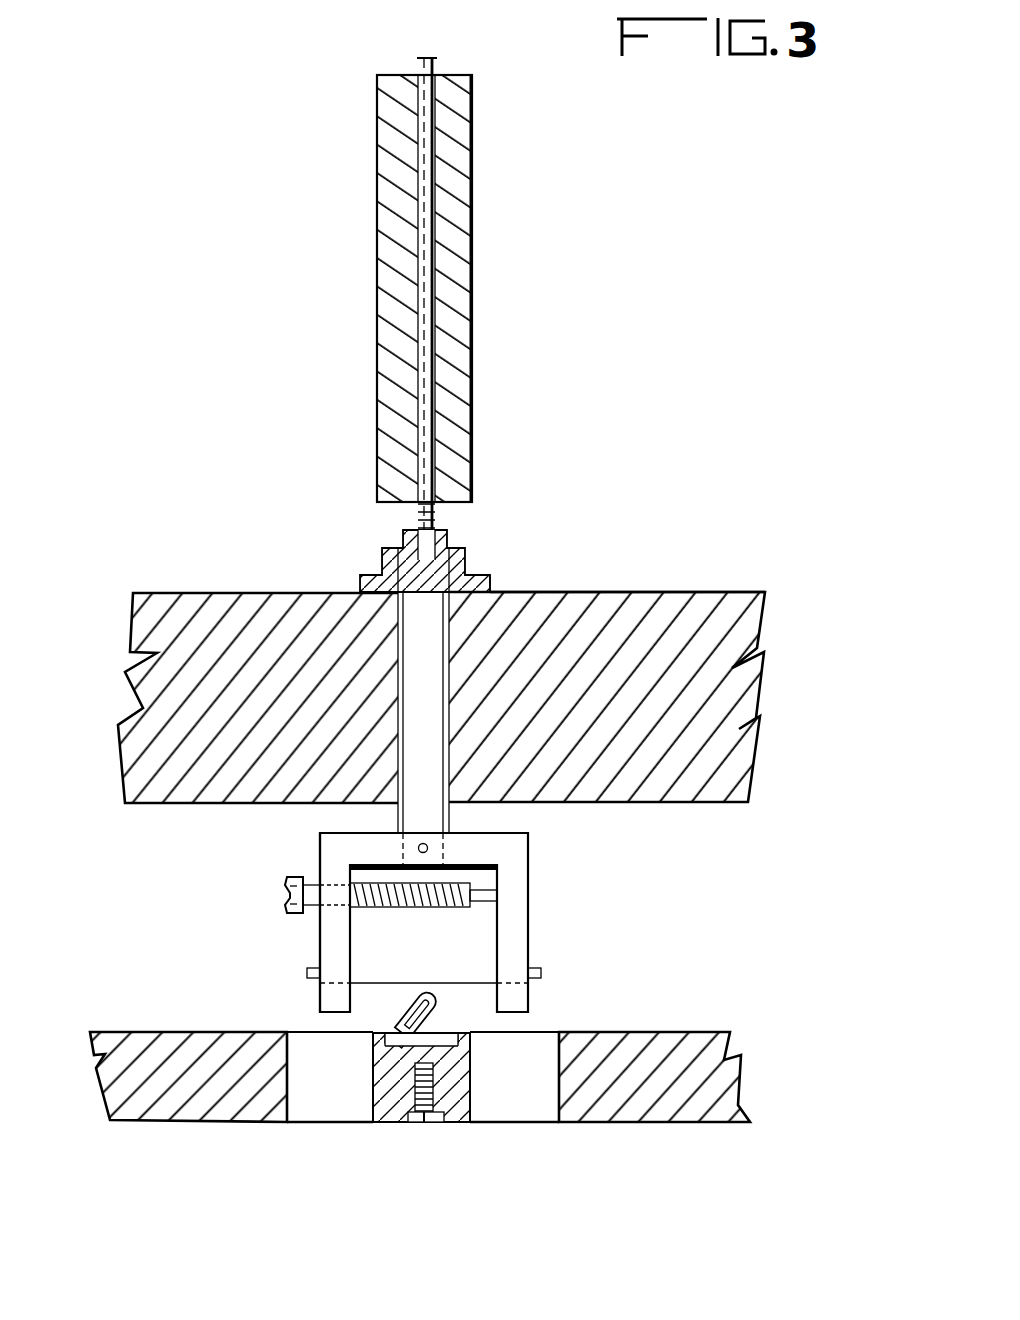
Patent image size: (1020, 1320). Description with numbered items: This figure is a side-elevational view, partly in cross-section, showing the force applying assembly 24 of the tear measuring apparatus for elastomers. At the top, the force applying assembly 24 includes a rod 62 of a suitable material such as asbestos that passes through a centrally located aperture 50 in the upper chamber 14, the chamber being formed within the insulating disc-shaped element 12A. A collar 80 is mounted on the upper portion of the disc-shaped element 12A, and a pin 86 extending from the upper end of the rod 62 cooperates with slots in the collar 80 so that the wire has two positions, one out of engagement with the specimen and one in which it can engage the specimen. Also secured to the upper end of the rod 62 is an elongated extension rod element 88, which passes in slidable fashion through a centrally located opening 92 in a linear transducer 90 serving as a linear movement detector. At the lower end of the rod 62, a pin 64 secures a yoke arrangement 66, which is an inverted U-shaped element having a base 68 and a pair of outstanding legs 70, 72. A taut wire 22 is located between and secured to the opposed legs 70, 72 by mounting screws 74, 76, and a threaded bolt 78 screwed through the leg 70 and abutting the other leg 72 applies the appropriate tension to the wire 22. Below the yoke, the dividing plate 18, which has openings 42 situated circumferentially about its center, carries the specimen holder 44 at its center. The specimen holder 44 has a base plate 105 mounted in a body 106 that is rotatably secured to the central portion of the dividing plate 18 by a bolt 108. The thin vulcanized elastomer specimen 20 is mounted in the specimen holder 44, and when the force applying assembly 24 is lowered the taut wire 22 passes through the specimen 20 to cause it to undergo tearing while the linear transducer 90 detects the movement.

The disc-shaped element 12A is at (688, 592).
The upper chamber 14 is at (772, 788).
The dividing plate 18 is at (705, 1002).
The elastomer specimen 20 is at (415, 1005).
The taut wire 22 is at (497, 983).
The force applying assembly 24 is at (492, 518).
The openings 42 is at (556, 1103).
The specimen holder 44 is at (447, 968).
The aperture 50 is at (445, 682).
The rod 62 is at (445, 712).
The pin 64 is at (430, 847).
The yoke arrangement 66 is at (555, 910).
The base 68 is at (350, 845).
The leg 70 is at (320, 931).
The leg 72 is at (526, 880).
The mounting screw 74 is at (308, 975).
The mounting screw 76 is at (540, 978).
The threaded bolt 78 is at (393, 906).
The collar 80 is at (492, 586).
The pin 86 is at (392, 553).
The elongated extension rod element 88 is at (428, 178).
The linear transducer 90 is at (492, 246).
The opening 92 is at (420, 418).
The base plate 105 is at (452, 1030).
The body 106 is at (475, 1064).
The bolt 108 is at (421, 1124).